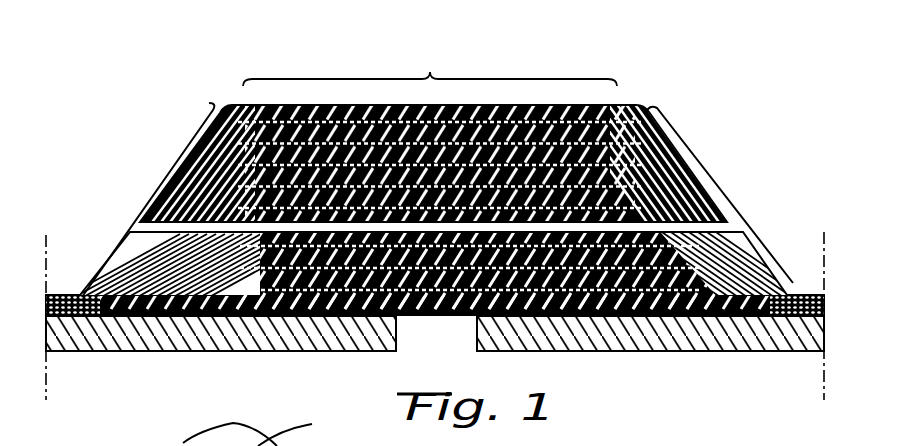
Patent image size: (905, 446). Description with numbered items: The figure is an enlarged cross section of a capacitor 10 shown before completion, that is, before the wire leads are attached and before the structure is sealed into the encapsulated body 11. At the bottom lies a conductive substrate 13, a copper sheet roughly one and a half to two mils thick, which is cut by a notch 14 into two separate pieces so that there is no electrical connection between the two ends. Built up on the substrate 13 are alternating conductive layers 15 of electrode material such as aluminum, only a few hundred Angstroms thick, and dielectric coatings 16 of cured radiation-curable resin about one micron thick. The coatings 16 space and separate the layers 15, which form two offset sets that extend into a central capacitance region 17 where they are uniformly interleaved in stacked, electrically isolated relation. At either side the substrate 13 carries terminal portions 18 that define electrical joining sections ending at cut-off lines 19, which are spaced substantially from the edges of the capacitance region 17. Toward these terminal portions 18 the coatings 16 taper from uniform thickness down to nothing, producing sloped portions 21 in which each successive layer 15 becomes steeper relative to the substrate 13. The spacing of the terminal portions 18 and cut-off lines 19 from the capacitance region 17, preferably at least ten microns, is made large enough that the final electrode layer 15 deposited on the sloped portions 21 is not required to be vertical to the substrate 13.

The capacitor 10 is at (225, 96).
The encapsulated body 11 is at (262, 433).
The conductive substrate 13 is at (232, 348).
The notch 14 is at (398, 333).
The conductive layers 15 is at (343, 105).
The dielectric coatings 16 is at (533, 110).
The capacitance region 17 is at (430, 65).
The terminal portions 18 is at (60, 290).
The cut-off lines 19 is at (50, 386).
The sloped portions 21 is at (746, 193).